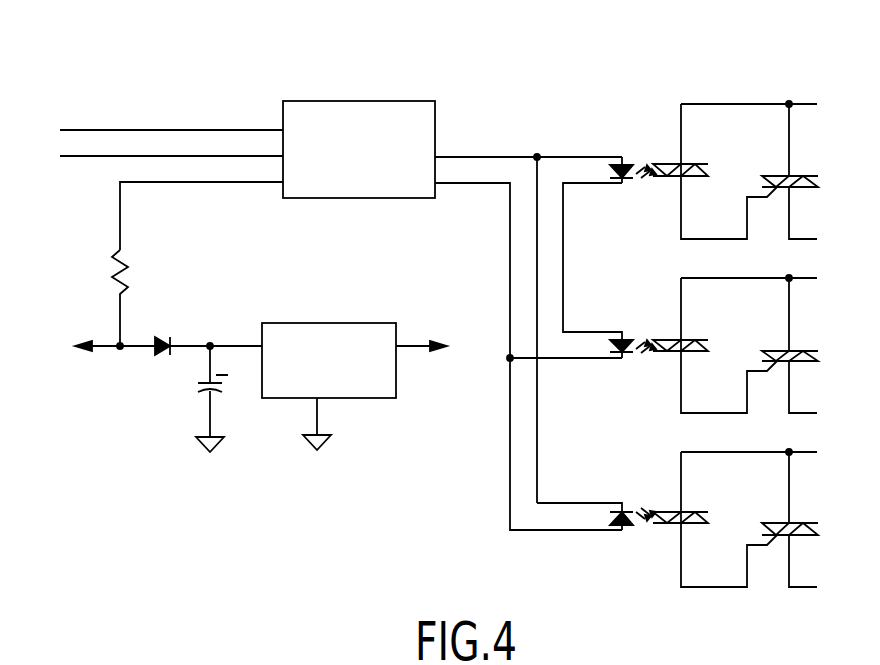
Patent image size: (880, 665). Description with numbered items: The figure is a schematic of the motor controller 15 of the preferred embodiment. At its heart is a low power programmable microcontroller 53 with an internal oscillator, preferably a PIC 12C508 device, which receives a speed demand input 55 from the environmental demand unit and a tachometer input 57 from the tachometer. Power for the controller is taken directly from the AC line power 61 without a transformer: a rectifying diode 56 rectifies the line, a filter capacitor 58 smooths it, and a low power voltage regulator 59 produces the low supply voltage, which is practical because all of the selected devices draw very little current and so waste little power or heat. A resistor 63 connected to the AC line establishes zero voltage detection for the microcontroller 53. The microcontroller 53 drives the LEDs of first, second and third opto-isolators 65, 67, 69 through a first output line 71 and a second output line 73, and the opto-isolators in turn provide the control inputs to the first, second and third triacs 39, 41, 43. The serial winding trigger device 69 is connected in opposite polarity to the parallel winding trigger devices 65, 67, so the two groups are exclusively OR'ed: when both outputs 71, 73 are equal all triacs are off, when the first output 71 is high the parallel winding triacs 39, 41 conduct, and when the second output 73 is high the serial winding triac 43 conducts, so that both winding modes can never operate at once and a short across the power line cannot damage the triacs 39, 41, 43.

The motor controller 15 is at (640, 58).
The first triac 39 is at (797, 351).
The second triac 41 is at (797, 176).
The third triac 43 is at (797, 523).
The microcontroller 53 is at (403, 101).
The speed demand input 55 is at (213, 130).
The rectifying diode 56 is at (162, 338).
The tachometer input 57 is at (68, 156).
The filter capacitor 58 is at (206, 390).
The voltage regulator 59 is at (372, 398).
The AC line power 61 is at (136, 348).
The resistor 63 is at (118, 282).
The first opto-isolator 65 is at (661, 321).
The second opto-isolator 67 is at (661, 145).
The third opto-isolator 69 is at (661, 496).
The first output line 71 is at (473, 157).
The second output line 73 is at (473, 183).